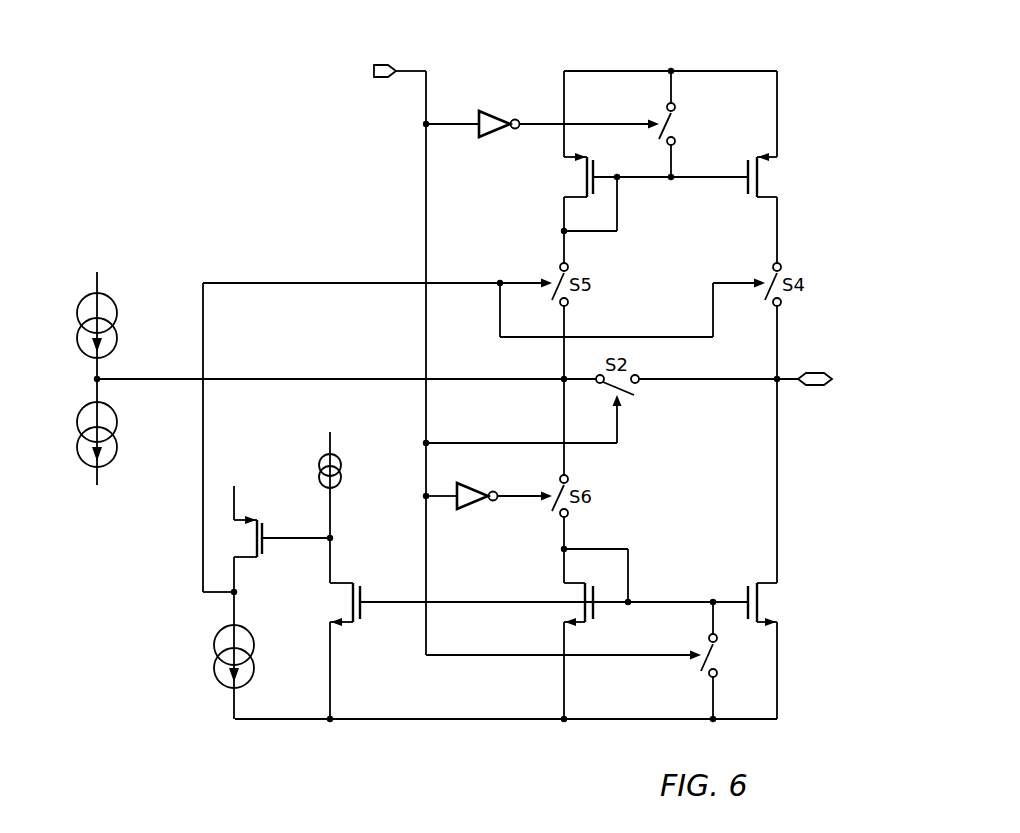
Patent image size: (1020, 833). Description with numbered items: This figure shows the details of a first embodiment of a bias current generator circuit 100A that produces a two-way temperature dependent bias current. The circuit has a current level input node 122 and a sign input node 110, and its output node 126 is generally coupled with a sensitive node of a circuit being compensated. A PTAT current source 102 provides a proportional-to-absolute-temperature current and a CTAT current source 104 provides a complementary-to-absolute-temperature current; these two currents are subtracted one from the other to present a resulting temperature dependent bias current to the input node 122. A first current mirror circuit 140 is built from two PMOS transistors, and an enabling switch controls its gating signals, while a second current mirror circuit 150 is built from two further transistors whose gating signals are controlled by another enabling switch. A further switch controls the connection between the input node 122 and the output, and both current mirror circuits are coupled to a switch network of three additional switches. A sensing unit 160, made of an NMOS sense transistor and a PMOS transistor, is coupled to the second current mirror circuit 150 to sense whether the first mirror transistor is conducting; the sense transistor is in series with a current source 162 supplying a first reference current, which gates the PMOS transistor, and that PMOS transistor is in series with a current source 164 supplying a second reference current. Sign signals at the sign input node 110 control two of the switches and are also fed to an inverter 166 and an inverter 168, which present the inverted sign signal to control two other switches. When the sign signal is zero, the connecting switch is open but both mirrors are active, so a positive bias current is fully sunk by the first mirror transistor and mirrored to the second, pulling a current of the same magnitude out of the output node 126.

The bias current generator circuit 100A is at (212, 139).
The sign input node 110 is at (383, 64).
The inverter 166 is at (497, 112).
The first current mirror circuit 140 is at (808, 134).
The PTAT current source 102 is at (77, 312).
The CTAT current source 104 is at (76, 438).
The current level input node 122 is at (154, 386).
The current source 162 is at (320, 458).
The current source 164 is at (214, 671).
The sensing unit 160 is at (271, 747).
The inverter 168 is at (478, 509).
The output node 126 is at (818, 390).
The second current mirror circuit 150 is at (807, 661).